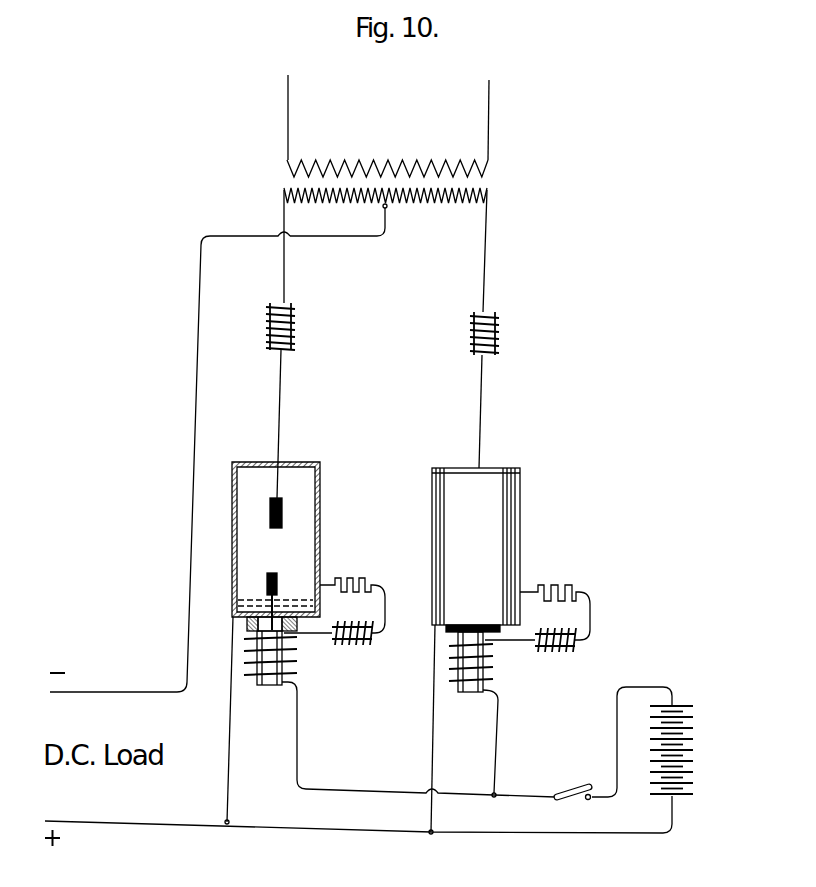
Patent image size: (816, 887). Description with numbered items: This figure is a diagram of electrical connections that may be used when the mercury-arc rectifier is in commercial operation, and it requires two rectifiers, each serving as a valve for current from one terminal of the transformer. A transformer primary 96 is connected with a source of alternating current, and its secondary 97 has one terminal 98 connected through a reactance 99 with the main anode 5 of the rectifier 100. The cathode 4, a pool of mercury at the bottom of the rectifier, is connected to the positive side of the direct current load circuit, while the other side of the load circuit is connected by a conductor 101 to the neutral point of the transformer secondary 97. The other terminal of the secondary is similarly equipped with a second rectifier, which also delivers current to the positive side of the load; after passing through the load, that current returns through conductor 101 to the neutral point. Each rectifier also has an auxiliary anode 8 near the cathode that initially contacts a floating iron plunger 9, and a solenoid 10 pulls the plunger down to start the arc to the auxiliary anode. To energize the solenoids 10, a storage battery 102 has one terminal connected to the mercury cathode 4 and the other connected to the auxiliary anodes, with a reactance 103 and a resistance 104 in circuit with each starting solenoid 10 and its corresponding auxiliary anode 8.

The transformer primary 96 is at (375, 166).
The transformer secondary 97 is at (428, 205).
The terminal of the transformer secondary 98 is at (283, 219).
The reactance 99 is at (294, 327).
The rectifier 100 is at (321, 504).
The conductor 101 is at (350, 237).
The storage battery 102 is at (693, 758).
The reactance 103 is at (361, 646).
The resistance 104 is at (369, 580).
The main anode 5 is at (270, 515).
The auxiliary anode 8 is at (267, 584).
The floating iron plunger 9 is at (276, 602).
The pool of mercury 4 is at (246, 605).
The solenoid 10 is at (292, 663).